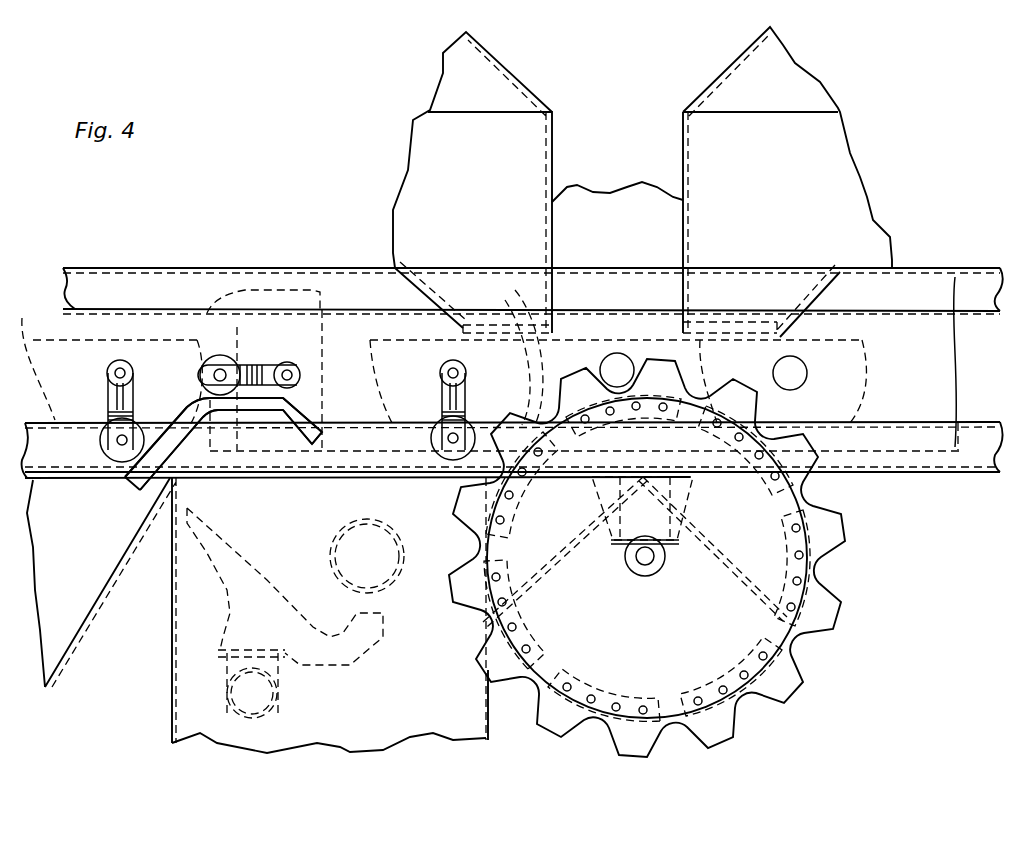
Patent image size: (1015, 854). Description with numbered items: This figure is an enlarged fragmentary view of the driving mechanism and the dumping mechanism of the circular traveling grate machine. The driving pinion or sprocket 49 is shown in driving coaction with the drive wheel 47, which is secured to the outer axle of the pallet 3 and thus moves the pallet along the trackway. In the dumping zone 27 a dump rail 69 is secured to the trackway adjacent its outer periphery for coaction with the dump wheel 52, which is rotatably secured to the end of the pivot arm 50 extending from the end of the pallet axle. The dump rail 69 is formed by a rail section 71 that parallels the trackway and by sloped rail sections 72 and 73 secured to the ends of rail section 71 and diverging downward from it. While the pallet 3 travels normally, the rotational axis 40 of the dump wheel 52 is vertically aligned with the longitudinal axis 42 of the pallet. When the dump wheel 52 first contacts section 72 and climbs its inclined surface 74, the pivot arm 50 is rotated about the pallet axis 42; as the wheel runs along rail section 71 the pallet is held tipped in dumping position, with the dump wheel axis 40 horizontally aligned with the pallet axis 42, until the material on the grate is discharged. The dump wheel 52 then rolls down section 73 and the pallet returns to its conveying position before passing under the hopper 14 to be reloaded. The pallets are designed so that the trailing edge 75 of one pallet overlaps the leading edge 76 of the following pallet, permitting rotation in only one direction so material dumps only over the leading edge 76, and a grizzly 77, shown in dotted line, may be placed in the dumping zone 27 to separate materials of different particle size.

The pallet 3 is at (297, 295).
The hopper 14 is at (552, 172).
The dumping zone 27 is at (172, 668).
The rotational axis of the dump wheel 40 is at (221, 363).
The longitudinal axis of the pallet 42 is at (120, 360).
The drive wheel 47 is at (630, 363).
The driving pinion or sprocket 49 is at (782, 636).
The pivot arm 50 is at (106, 394).
The dump wheel 52 is at (107, 440).
The dump rail 69 is at (222, 441).
The rail section 71 is at (300, 398).
The inclined rail section 72 is at (173, 450).
The inclined rail section 73 is at (322, 406).
The inclined surface 74 is at (177, 422).
The trailing edge 75 is at (20, 332).
The leading edge 76 is at (197, 341).
The grizzly 77 is at (267, 580).